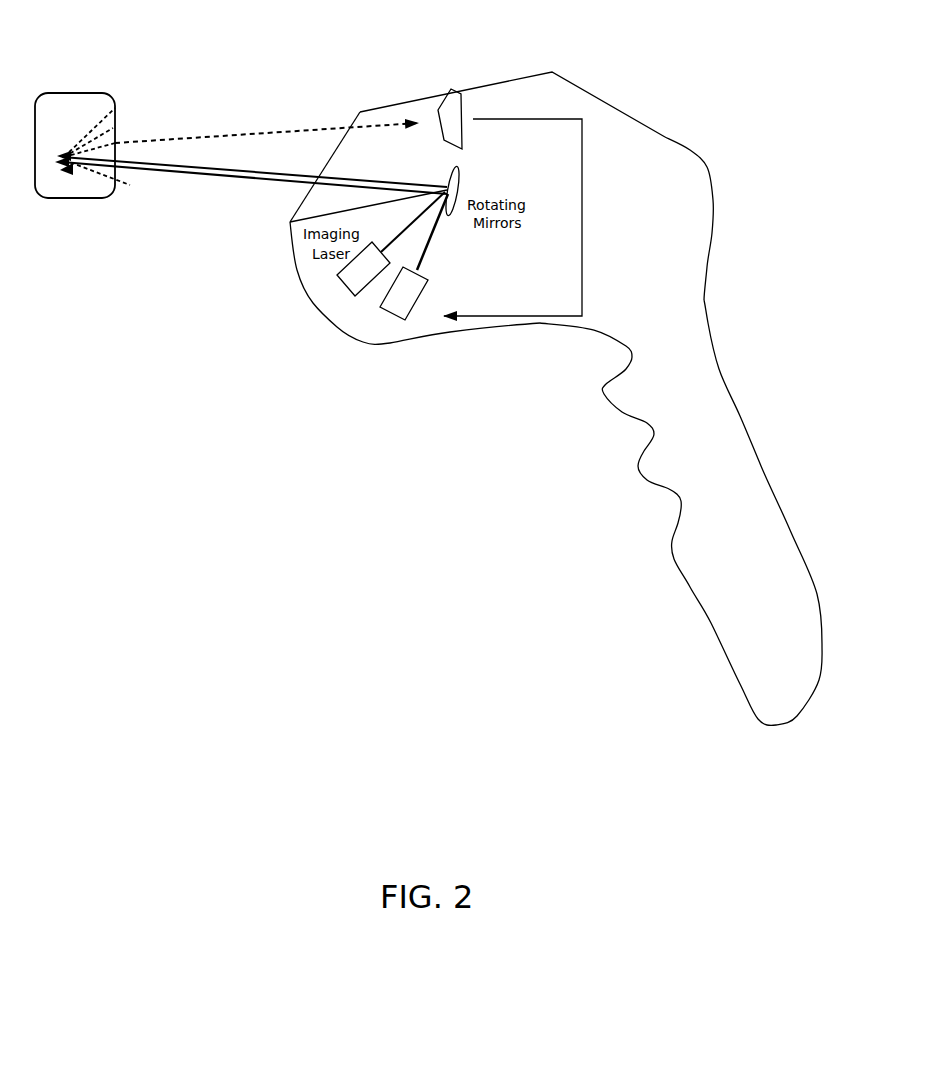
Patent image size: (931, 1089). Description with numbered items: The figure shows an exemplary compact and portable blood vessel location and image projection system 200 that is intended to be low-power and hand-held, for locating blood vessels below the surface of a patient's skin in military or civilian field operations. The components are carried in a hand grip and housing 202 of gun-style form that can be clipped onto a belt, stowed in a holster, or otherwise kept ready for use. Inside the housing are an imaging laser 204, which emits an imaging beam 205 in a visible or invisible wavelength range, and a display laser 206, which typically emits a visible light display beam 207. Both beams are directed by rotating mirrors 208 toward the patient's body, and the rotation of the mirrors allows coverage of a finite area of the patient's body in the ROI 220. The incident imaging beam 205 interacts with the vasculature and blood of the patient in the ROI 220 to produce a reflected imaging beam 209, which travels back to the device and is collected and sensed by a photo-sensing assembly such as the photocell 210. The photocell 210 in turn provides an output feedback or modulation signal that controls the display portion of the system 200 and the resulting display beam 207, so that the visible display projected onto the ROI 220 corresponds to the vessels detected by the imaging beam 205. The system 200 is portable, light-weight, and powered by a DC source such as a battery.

The blood vessel location and image projection system 200 is at (249, 642).
The hand grip and housing 202 is at (636, 466).
The imaging laser 204 is at (308, 302).
The imaging beam 205 is at (173, 158).
The display laser 206 is at (444, 273).
The display beam 207 is at (205, 184).
The rotating mirrors 208 is at (475, 160).
The reflected imaging beam 209 is at (285, 122).
The photocell 210 is at (497, 80).
The ROI 220 is at (73, 178).